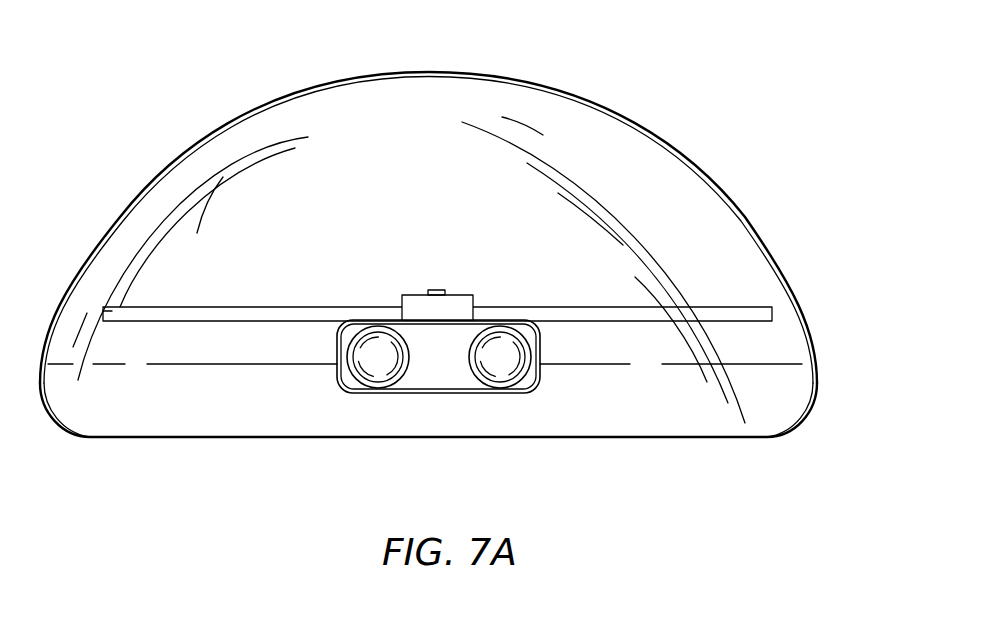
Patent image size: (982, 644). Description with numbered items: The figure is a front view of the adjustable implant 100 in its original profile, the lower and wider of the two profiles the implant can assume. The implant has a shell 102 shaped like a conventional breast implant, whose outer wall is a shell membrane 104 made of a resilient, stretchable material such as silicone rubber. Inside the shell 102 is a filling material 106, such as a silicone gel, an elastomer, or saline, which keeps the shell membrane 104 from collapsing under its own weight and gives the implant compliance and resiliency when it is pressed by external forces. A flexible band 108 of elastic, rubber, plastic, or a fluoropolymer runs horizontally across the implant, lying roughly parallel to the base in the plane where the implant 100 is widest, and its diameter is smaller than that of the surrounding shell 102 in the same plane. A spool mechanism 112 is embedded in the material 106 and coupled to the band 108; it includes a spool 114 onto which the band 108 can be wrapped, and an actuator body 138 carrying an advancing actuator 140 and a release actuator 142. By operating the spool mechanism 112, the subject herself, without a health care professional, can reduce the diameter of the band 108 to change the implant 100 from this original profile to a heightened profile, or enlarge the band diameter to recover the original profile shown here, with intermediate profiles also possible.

The adjustable implant 100 is at (176, 42).
The shell 102 is at (508, 78).
The shell membrane 104 is at (598, 100).
The material 106 is at (370, 97).
The flexible band 108 is at (732, 317).
The spool mechanism 112 is at (381, 267).
The spool 114 is at (460, 295).
The actuator body 138 is at (443, 370).
The advancing actuator 140 is at (497, 360).
The release actuator 142 is at (378, 360).